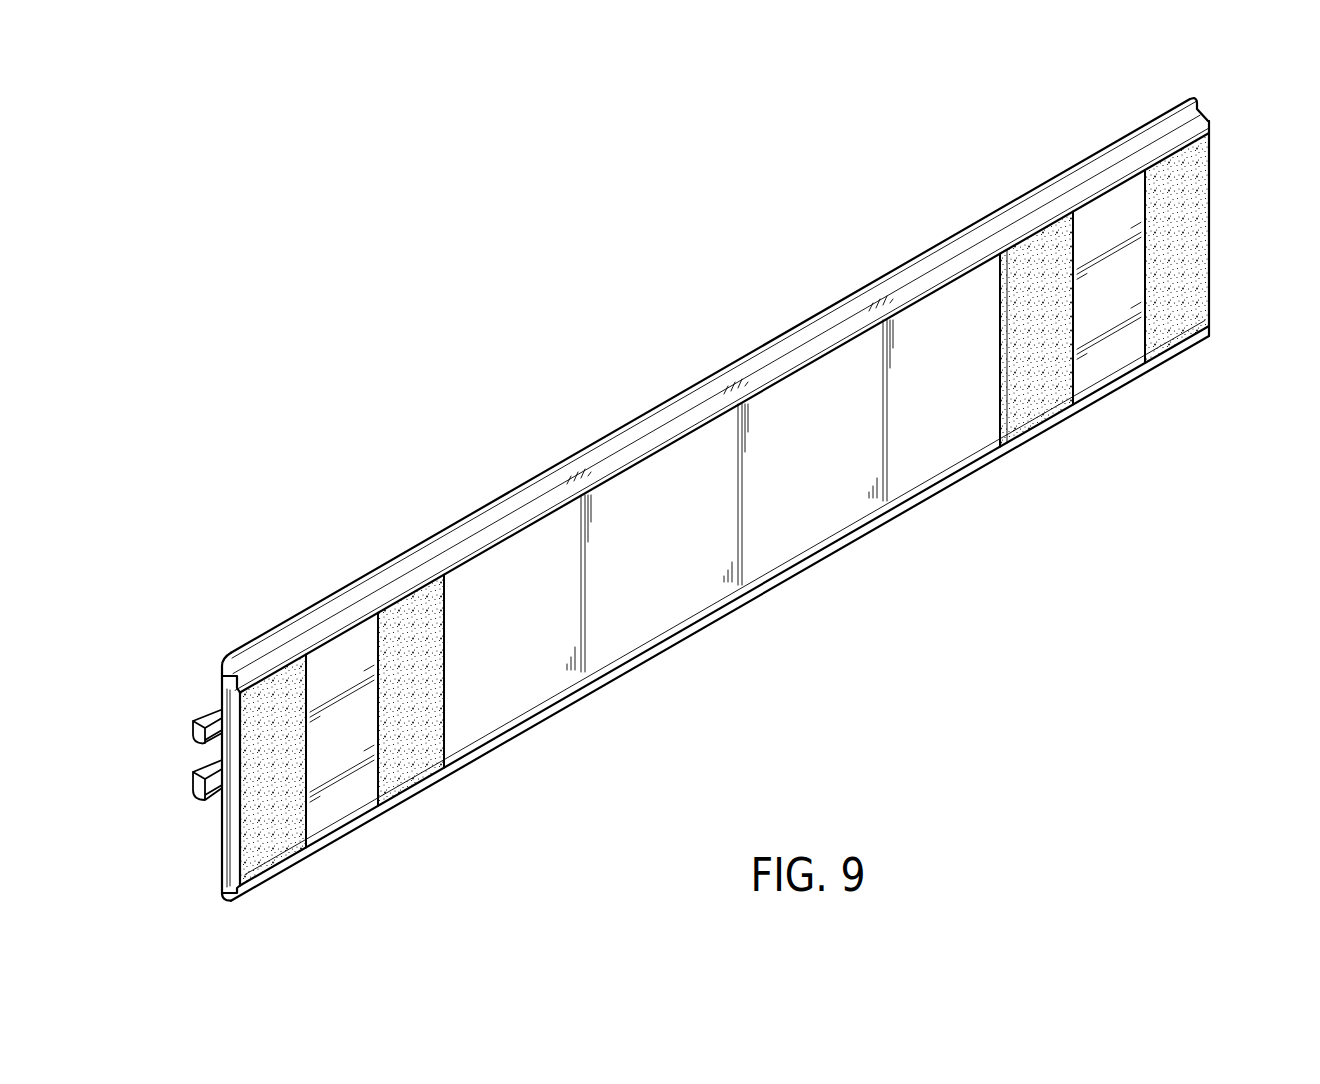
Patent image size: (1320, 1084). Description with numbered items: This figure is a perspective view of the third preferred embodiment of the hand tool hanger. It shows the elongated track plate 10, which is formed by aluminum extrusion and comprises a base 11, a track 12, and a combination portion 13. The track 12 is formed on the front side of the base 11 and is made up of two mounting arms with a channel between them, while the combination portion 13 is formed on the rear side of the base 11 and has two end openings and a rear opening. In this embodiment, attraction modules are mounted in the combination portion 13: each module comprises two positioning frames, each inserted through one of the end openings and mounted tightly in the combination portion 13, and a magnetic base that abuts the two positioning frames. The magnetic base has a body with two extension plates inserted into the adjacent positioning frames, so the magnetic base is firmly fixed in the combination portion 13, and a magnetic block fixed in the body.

The track plate 10 is at (725, 344).
The base 11 is at (612, 427).
The track 12 is at (169, 761).
The combination portion 13 is at (818, 575).